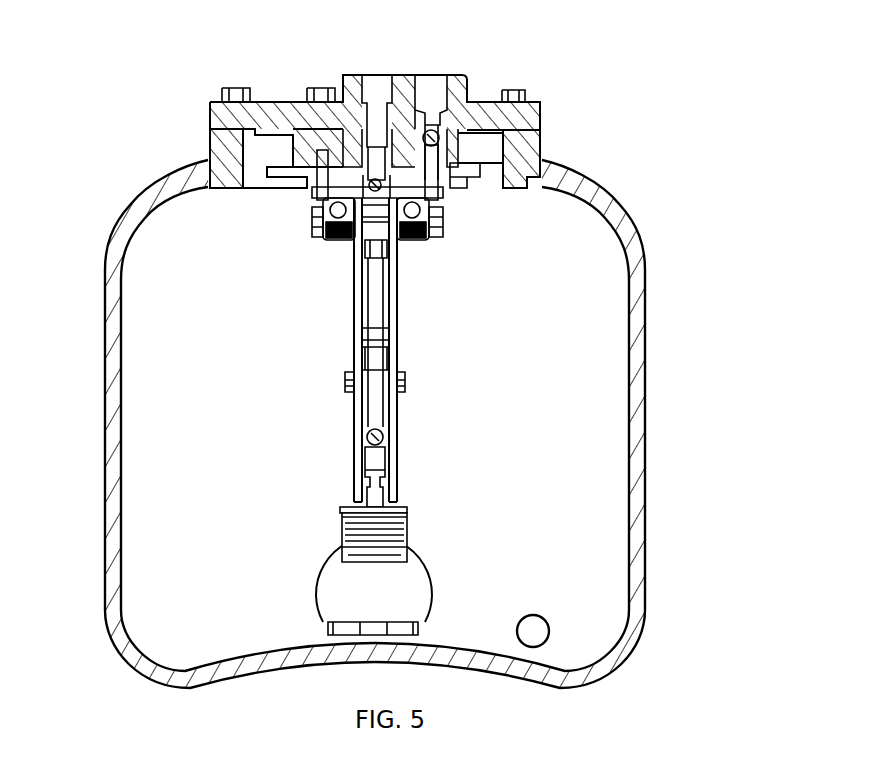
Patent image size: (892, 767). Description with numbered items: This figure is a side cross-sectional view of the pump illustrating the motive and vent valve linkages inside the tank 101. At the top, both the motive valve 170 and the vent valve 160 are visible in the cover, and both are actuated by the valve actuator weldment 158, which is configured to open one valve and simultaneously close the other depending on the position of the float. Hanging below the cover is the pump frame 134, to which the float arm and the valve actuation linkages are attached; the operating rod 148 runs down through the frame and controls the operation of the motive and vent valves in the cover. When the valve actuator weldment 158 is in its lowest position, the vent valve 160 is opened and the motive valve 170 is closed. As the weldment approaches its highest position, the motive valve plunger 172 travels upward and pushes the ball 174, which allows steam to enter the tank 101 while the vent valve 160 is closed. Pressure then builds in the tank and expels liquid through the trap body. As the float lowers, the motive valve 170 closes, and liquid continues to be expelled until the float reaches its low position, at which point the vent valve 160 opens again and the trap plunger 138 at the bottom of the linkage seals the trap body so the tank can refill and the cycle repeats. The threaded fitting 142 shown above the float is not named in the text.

The tank 101 is at (105, 295).
The valve actuator weldment 158 is at (367, 130).
The vent valve 160 is at (368, 160).
The ball 174 is at (447, 127).
The motive valve 170 is at (440, 178).
The motive valve plunger 172 is at (440, 193).
The pump frame 134 is at (397, 303).
The operating rod 148 is at (375, 307).
The trap plunger 138 is at (353, 510).
The threaded cap 142 is at (408, 523).